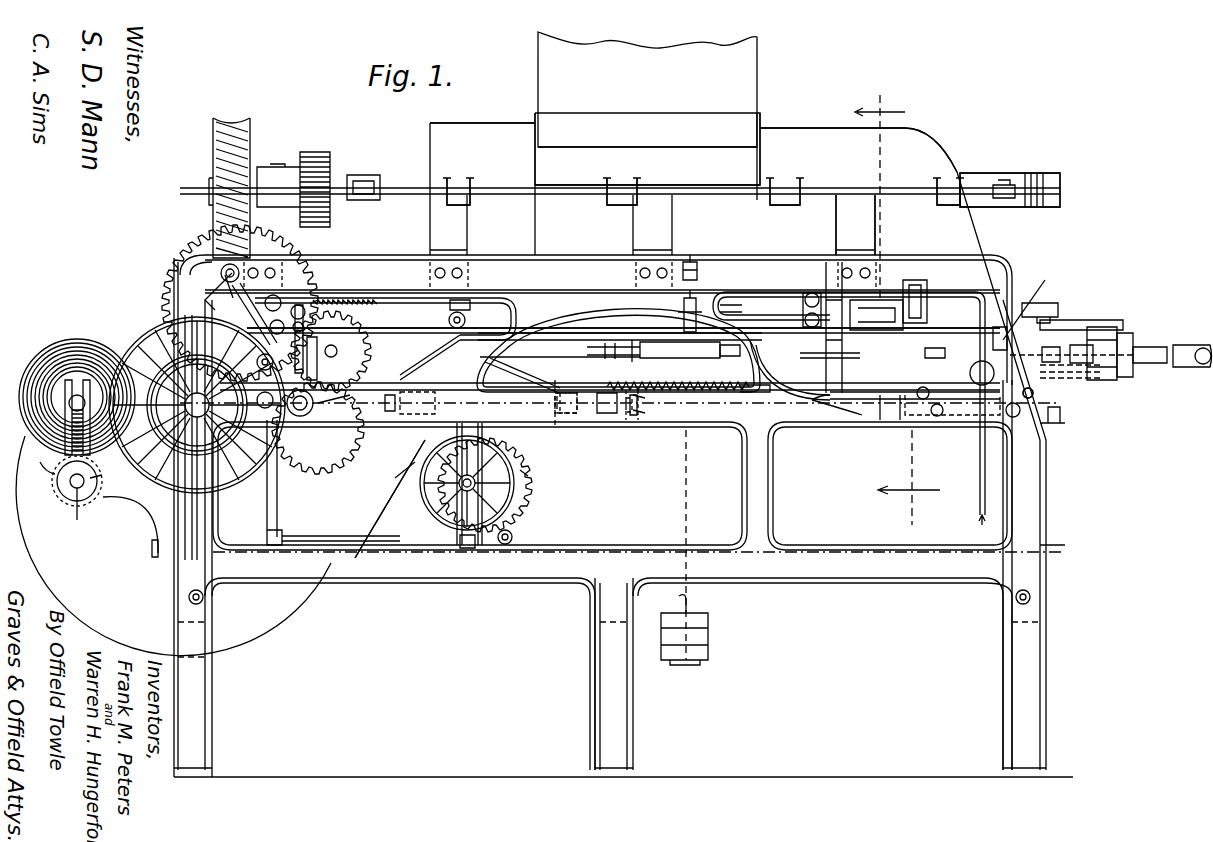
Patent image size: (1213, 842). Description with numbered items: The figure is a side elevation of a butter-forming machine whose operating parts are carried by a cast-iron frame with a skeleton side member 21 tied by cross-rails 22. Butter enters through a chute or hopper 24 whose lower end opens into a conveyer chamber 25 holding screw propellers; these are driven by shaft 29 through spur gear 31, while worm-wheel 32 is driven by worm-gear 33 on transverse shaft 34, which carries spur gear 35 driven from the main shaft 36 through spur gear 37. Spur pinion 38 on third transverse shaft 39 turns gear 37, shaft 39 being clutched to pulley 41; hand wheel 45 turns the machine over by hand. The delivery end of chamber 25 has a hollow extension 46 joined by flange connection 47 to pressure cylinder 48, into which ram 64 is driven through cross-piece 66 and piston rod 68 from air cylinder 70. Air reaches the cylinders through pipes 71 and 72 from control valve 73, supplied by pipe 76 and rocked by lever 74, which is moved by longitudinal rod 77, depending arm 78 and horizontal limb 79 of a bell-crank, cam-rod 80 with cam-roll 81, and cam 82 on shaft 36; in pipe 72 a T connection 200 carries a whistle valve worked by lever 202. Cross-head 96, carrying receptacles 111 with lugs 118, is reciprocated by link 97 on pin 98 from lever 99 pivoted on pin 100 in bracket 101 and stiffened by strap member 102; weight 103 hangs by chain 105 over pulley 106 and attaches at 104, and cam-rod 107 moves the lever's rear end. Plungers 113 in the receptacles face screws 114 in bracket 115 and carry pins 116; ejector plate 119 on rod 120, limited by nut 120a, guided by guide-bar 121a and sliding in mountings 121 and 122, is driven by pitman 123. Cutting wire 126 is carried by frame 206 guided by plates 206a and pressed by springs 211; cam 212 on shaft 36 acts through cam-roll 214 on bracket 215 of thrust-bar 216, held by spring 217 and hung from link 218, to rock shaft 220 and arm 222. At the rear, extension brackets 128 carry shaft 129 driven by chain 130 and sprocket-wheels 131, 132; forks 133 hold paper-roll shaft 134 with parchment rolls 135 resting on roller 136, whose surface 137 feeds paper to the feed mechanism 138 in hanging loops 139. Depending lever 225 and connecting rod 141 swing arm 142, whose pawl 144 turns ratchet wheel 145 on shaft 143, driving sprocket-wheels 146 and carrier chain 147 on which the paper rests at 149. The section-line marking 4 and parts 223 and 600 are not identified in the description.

The chute or hopper 24 is at (760, 52).
The conveyer chamber 25 is at (775, 135).
The skeleton side member 21 is at (545, 257).
The cross-rail 22 is at (860, 252).
The worm-wheel 32 is at (250, 120).
The spur gear 31 is at (330, 158).
The shaft 29 is at (385, 185).
The hollow extension 46 is at (992, 242).
The section line 4 is at (897, 301).
The pulley 106 is at (692, 260).
The plates 206a is at (838, 262).
The vertically reciprocable frame 206 is at (868, 300).
The coil compression springs 211 is at (920, 300).
The lever 202 is at (1045, 280).
The flange connection 47 is at (1040, 303).
The pressure cylinder 48 is at (1058, 322).
The air cylinder 70 is at (1100, 330).
The ram or plunger 64 is at (1128, 333).
The piston rod 68 is at (1152, 348).
The cross-piece 66 is at (1200, 368).
The pipe 72 is at (1085, 382).
The paper resting location 149 is at (1062, 424).
The control valve 73 is at (982, 385).
The arm or lever 74 is at (990, 357).
The cam 212 is at (925, 344).
The rod 223 is at (800, 356).
The cross-head 96 is at (780, 388).
The receptacles 111 is at (756, 392).
The pin 98 is at (806, 297).
The link 97 is at (800, 307).
The lugs 118 is at (738, 303).
The connection point 104 is at (698, 300).
The lever 99 is at (604, 320).
The upwardly-projecting pins 116 is at (655, 342).
The longitudinal rod 77 is at (560, 347).
The guide-bar 121a is at (522, 371).
The bracket 115 is at (560, 390).
The ejector plate 119 is at (613, 359).
The adjustable headed screws 114 is at (650, 360).
The plungers 113 is at (700, 362).
The thrust-bar 216 is at (705, 390).
The spring 217 is at (660, 392).
The mounting 122 is at (608, 416).
The mounting 121 is at (568, 416).
The rod 120 is at (630, 418).
The nut 120a is at (640, 405).
The chain 105 is at (690, 482).
The weight 103 is at (700, 628).
The bracket 101 is at (465, 300).
The pin 100 is at (468, 318).
The bent strap member 102 is at (420, 318).
The horizontal limb 79 is at (305, 300).
The depending arm 78 is at (265, 315).
The worm-gear 33 is at (205, 282).
The transverse shaft 34 is at (228, 292).
The spur gear 35 is at (168, 258).
The spur pinion 38 is at (157, 361).
The hand wheel 45 is at (215, 437).
The forks 133 is at (50, 358).
The paper-roll shaft 134 is at (70, 360).
The rolls 135 is at (100, 360).
The surface 137 is at (40, 464).
The sprocket-wheel 131 is at (58, 496).
The roller 136 is at (102, 478).
The shaft 129 is at (76, 512).
The chain 130 is at (118, 500).
The extension brackets 128 is at (150, 520).
The loops 139 is at (100, 620).
The third transverse shaft 39 is at (182, 458).
The pulley 41 is at (271, 482).
The depending lever 225 is at (283, 512).
The intermittent paper feed mechanism 138 is at (390, 502).
The adjustable connecting rod 141 is at (380, 515).
The chain 147 is at (400, 459).
The cam-roll 214 is at (380, 465).
The pitman 123 is at (402, 416).
The main shaft 36 is at (300, 403).
The cam 82 is at (311, 433).
The sprocket-wheel 132 is at (308, 436).
The spur gear 37 is at (366, 356).
The pivoted link 218 is at (370, 330).
The cam-roll 81 is at (271, 359).
The cam-rod 80 is at (317, 358).
The small bracket 215 is at (305, 384).
The transverse shaft 143 is at (518, 466).
The sprocket-wheels 146 is at (532, 500).
The ratchet wheel 145 is at (530, 483).
The arm 142 is at (515, 535).
The spring-pressed pawl 144 is at (468, 548).
The arm 222 is at (880, 392).
The pipe 71 is at (952, 405).
The T connection 200 is at (883, 418).
The rock shaft 220 is at (900, 420).
The cutting wire 126 is at (855, 405).
The pipe 76 is at (978, 485).
The pin 600 is at (1021, 389).
The cam-rod 107 is at (415, 322).